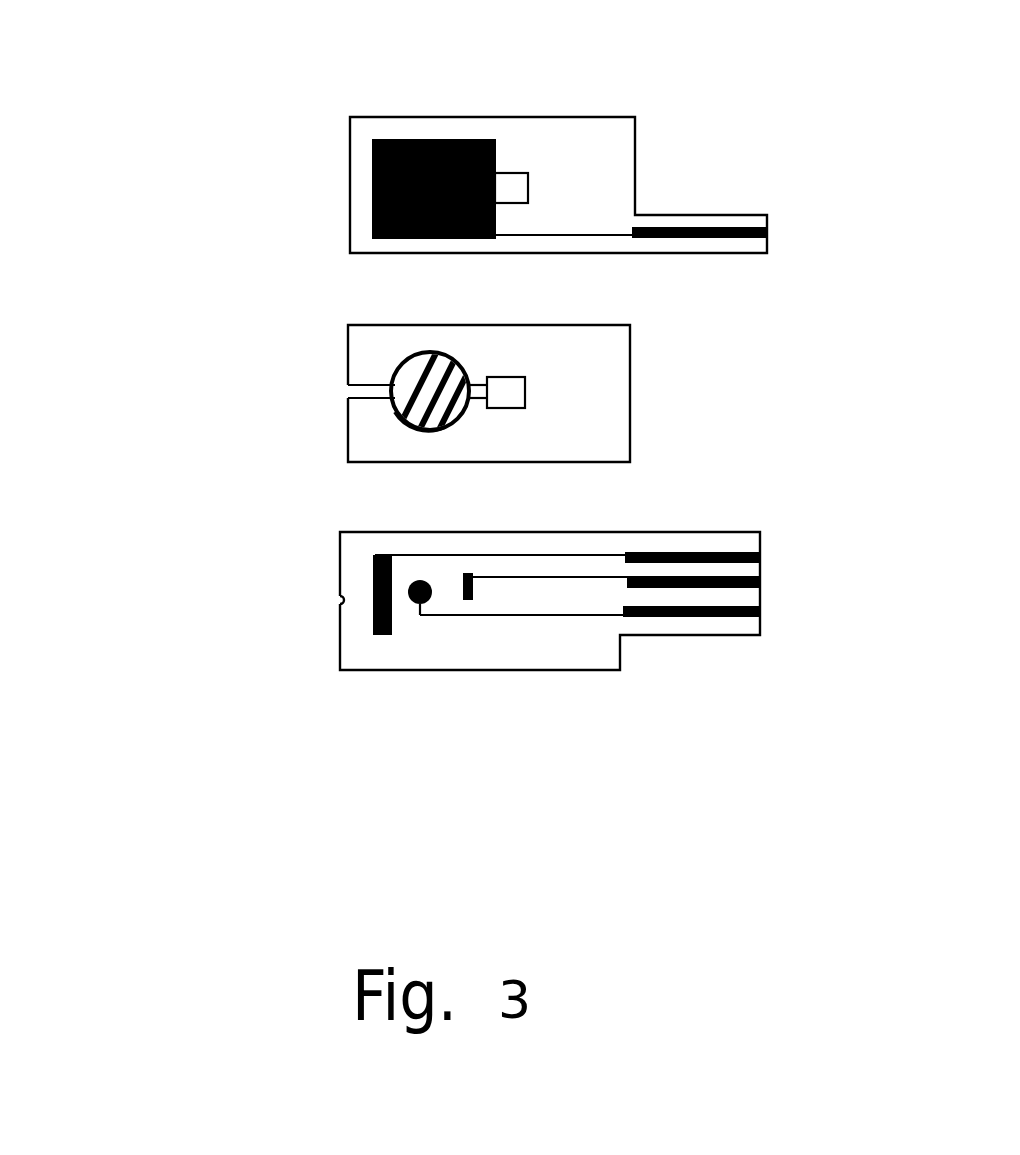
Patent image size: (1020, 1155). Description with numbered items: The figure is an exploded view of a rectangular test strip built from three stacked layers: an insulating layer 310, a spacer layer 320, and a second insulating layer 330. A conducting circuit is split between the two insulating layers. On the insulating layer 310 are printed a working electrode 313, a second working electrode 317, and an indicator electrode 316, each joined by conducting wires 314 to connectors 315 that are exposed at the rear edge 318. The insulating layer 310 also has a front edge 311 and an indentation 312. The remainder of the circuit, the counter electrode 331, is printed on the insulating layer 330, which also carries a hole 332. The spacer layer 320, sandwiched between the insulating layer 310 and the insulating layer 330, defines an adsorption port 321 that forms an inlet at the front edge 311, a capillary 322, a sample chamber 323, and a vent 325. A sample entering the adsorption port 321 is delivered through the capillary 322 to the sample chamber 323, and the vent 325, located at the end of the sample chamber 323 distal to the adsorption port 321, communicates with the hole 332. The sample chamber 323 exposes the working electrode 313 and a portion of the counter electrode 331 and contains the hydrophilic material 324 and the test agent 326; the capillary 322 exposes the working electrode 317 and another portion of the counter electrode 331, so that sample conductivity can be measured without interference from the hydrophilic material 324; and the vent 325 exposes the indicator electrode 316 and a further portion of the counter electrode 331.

The insulating layer 310 is at (277, 578).
The front edge 311 is at (342, 648).
The indentation 312 is at (343, 602).
The working electrode 313 is at (430, 580).
The conducting wires 314 is at (588, 242).
The connectors 315 is at (742, 242).
The indicator electrode 316 is at (470, 573).
The working electrode 317 is at (393, 585).
The rear edge 318 is at (763, 592).
The spacer layer 320 is at (278, 350).
The adsorption port 321 is at (357, 388).
The capillary 322 is at (380, 400).
The sample chamber 323 is at (428, 375).
The hydrophilic material 324 is at (413, 360).
The vent 325 is at (488, 390).
The test agent 326 is at (408, 418).
The insulating layer 330 is at (303, 124).
The counter electrode 331 is at (442, 137).
The hole 332 is at (515, 182).